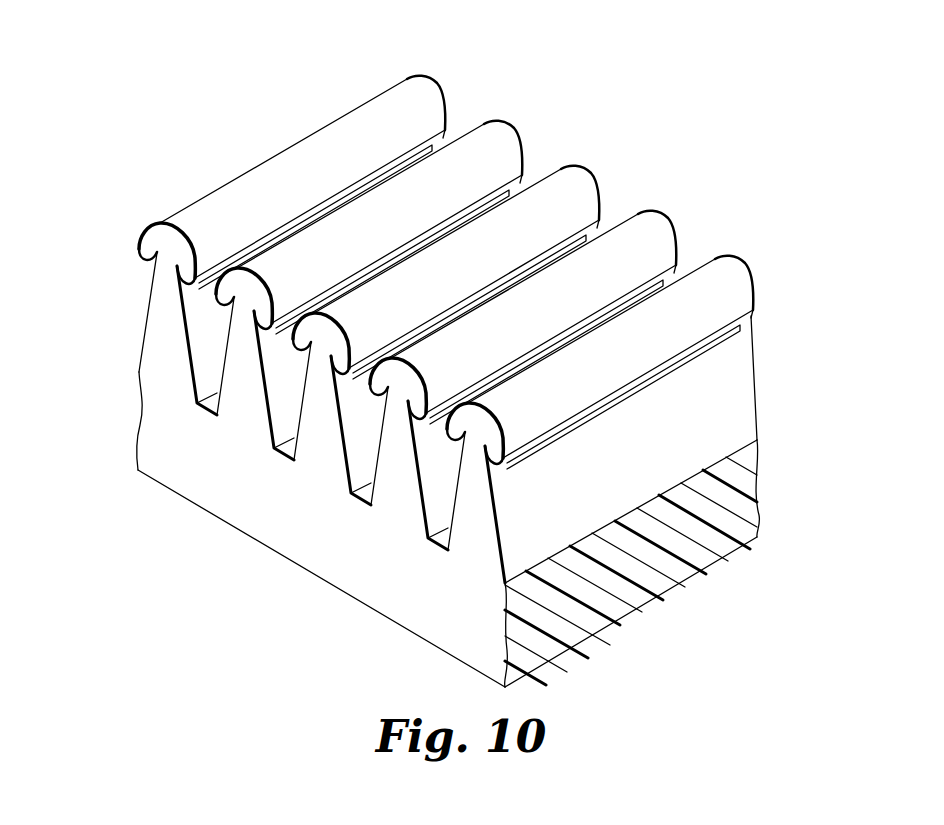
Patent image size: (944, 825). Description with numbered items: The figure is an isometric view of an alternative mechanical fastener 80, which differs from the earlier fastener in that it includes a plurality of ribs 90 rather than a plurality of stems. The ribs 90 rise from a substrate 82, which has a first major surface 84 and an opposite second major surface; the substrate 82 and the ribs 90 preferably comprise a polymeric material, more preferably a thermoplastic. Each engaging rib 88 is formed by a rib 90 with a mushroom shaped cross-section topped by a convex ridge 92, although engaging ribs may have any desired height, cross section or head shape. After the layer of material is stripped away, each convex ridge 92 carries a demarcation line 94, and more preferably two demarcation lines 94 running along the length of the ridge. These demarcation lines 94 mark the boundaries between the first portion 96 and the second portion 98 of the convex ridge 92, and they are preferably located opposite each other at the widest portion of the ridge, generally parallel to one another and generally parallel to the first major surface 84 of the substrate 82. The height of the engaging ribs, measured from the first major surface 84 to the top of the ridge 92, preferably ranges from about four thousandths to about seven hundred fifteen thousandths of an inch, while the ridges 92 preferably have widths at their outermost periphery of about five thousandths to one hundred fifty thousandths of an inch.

The mechanical fastener 80 is at (668, 150).
The substrate 82 is at (395, 607).
The first major surface 84 is at (297, 462).
The engaging rib 88 is at (473, 133).
The rib 90 is at (145, 363).
The convex ridge 92 is at (165, 240).
The demarcation line 94 is at (218, 290).
The first portion 96 is at (272, 172).
The second portion 98 is at (530, 450).